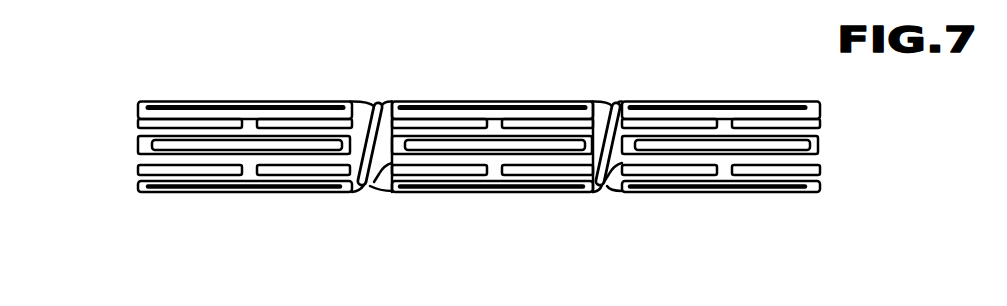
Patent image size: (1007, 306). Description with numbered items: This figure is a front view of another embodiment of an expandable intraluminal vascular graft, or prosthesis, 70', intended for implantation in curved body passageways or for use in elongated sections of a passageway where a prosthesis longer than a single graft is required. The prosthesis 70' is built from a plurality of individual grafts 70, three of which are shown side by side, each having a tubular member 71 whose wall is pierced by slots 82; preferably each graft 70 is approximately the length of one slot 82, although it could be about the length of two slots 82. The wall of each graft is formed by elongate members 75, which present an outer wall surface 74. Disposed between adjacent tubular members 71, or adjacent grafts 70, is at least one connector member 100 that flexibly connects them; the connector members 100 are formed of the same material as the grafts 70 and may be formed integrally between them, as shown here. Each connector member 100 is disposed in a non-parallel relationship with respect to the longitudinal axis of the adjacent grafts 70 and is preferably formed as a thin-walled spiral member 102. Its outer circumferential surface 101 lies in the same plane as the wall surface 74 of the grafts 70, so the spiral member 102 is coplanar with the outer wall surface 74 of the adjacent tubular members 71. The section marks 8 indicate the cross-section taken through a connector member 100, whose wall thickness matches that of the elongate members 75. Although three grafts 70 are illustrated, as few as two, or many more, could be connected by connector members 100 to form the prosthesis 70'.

The graft 70 is at (434, 109).
The expandable intraluminal vascular graft 70' is at (721, 109).
The tubular member 71 is at (147, 101).
The wall surface 74 is at (410, 193).
The elongate member 75 is at (161, 163).
The slot 82 is at (152, 150).
The connector member 100 is at (378, 99).
The outer circumferential surface 101 is at (353, 101).
The thin-walled spiral member 102 is at (605, 103).
The section line 8- 8 is at (340, 82).